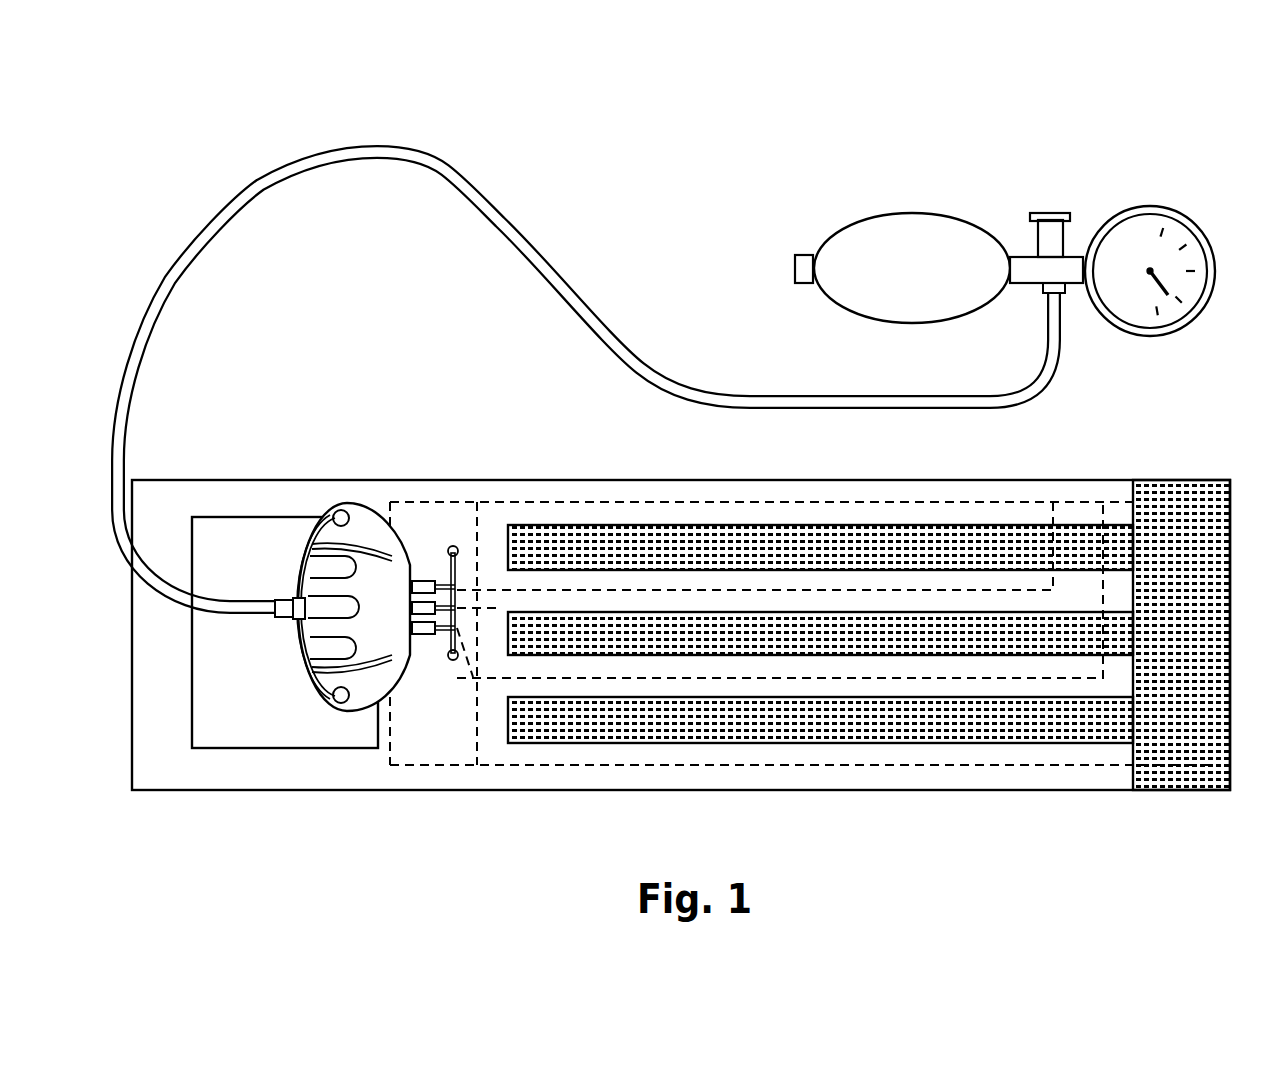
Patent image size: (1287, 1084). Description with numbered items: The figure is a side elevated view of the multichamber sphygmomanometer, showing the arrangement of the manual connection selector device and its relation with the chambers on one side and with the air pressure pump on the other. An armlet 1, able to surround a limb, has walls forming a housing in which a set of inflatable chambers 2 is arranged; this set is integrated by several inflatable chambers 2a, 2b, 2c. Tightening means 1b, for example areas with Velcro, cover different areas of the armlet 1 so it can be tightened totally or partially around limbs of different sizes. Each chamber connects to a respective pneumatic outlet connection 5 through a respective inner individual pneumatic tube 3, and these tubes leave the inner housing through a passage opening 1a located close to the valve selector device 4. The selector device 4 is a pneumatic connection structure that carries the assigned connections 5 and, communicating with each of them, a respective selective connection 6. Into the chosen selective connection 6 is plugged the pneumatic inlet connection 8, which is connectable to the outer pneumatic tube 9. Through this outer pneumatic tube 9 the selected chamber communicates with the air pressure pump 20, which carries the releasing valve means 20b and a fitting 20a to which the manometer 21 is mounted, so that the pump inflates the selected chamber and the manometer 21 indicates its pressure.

The armlet 1 is at (1210, 826).
The passage opening 1a is at (458, 660).
The tightening means 1b is at (955, 548).
The set of inflatable chambers 2 is at (757, 790).
The inflatable chamber 2a is at (992, 592).
The inflatable chamber 2b is at (908, 663).
The inflatable chamber 2c is at (842, 748).
The inner individual pneumatic tube 3 is at (440, 642).
The valve selector device 4 is at (370, 592).
The pneumatic outlet connection 5 is at (426, 568).
The selective connection 6 is at (273, 565).
The pneumatic inlet connection 8 is at (285, 618).
The outer pneumatic tube 9 is at (530, 250).
The air pressure pump 20 is at (880, 240).
The connector fitting 20a is at (1077, 258).
The releasing valve means 20b is at (1047, 212).
The manometer 21 is at (1200, 232).